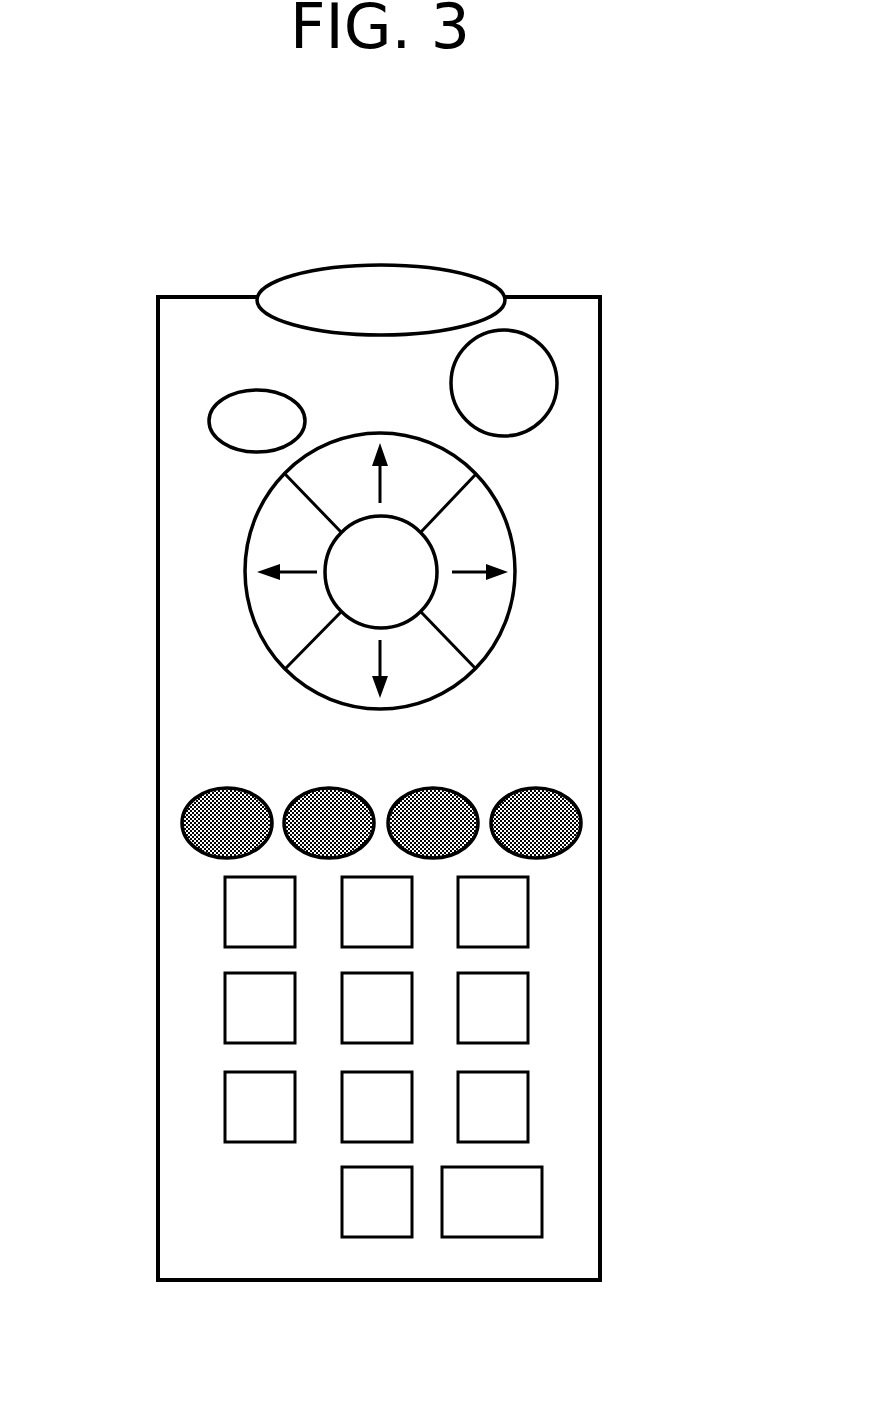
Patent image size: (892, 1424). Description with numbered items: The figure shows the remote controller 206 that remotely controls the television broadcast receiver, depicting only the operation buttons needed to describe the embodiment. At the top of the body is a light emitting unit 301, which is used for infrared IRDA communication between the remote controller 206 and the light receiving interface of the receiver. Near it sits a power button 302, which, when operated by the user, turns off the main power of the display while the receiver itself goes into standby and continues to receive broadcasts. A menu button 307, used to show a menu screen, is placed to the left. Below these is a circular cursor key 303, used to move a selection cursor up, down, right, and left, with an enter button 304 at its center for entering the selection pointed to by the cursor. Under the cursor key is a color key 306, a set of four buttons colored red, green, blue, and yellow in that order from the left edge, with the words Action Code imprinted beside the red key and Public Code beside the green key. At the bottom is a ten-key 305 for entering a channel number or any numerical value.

The remote controller 206 is at (392, 1282).
The light emitting unit 301 is at (390, 265).
The power button 302 is at (557, 378).
The cursor key 303 is at (245, 577).
The enter button 304 is at (438, 553).
The ten-key 305 is at (225, 918).
The color key 306 is at (182, 825).
The menu button 307 is at (208, 425).